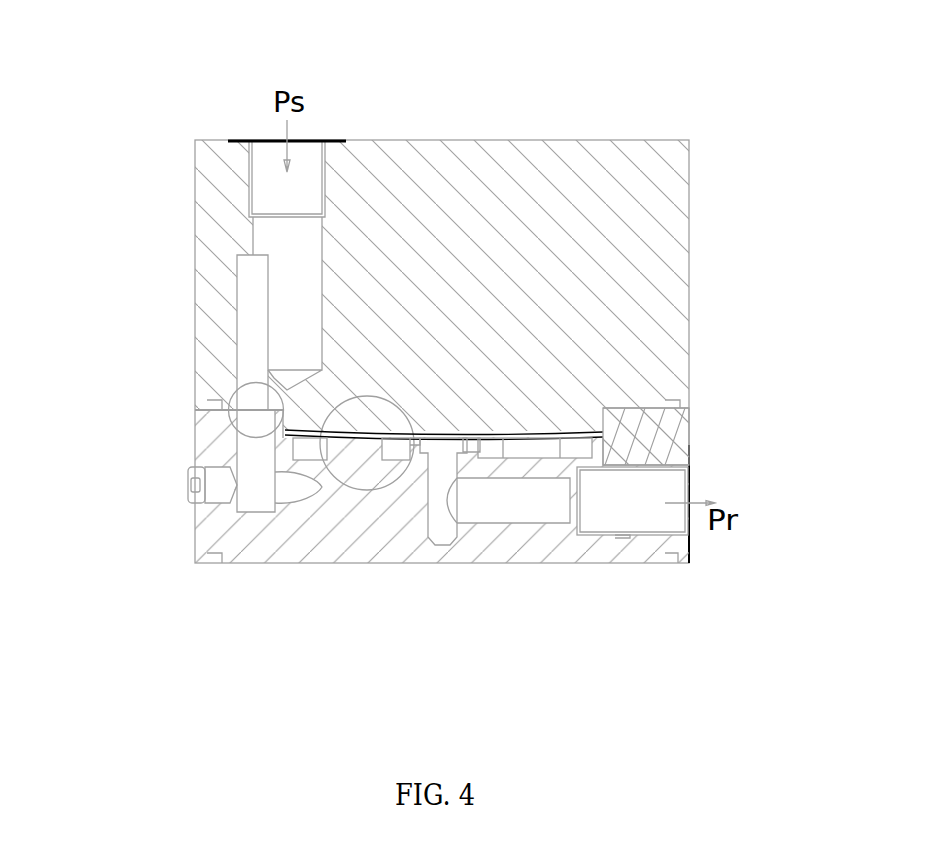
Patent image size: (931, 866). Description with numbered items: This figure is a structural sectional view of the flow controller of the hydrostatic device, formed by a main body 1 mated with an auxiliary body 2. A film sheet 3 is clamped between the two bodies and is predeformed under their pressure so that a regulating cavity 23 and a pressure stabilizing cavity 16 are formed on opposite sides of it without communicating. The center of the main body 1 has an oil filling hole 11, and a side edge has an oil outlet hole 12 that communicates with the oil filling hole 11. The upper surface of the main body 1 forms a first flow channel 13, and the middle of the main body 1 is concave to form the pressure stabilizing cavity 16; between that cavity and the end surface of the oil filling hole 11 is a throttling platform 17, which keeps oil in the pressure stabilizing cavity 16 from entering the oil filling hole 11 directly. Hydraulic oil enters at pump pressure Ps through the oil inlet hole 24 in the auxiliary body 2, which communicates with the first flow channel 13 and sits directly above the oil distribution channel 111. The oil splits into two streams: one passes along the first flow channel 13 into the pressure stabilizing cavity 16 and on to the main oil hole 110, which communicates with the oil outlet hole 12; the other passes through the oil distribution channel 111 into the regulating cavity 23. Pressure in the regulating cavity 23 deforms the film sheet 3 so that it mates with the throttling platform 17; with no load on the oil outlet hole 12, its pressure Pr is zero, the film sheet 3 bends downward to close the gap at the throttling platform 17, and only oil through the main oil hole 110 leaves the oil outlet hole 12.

The main body 1 is at (509, 563).
The auxiliary body 2 is at (195, 220).
The film sheet 3 is at (603, 436).
The oil filling hole 11 is at (430, 530).
The oil outlet hole 12 is at (628, 503).
The first flow channel 13 is at (230, 411).
The pressure stabilizing cavity 16 is at (495, 453).
The throttling platform 17 is at (472, 442).
The regulating cavity 23 is at (325, 428).
The oil inlet hole 24 is at (257, 303).
The main oil hole 110 is at (630, 435).
The oil distribution channel 111 is at (255, 492).